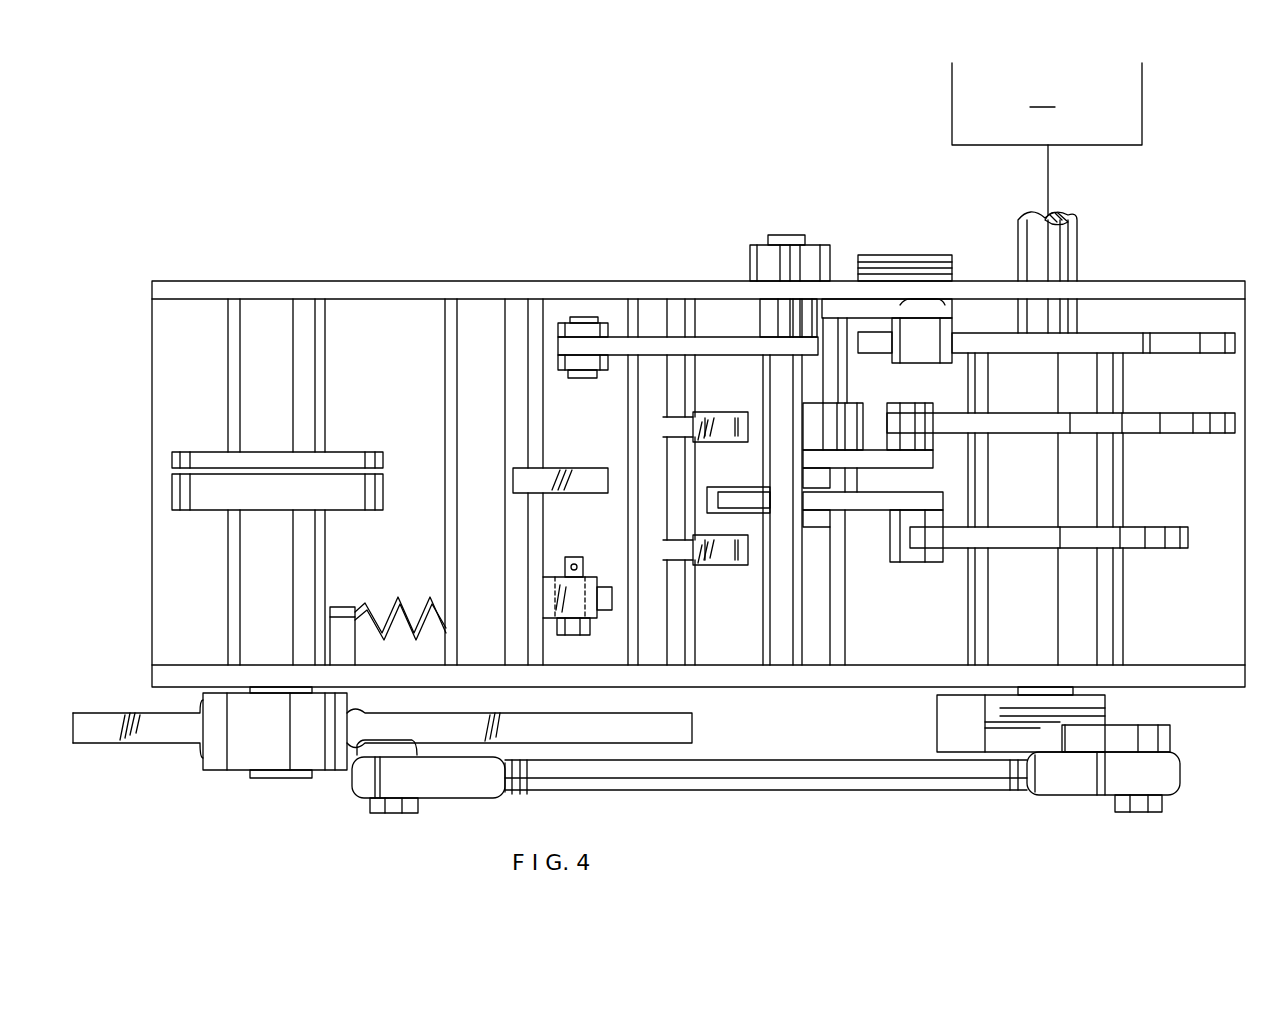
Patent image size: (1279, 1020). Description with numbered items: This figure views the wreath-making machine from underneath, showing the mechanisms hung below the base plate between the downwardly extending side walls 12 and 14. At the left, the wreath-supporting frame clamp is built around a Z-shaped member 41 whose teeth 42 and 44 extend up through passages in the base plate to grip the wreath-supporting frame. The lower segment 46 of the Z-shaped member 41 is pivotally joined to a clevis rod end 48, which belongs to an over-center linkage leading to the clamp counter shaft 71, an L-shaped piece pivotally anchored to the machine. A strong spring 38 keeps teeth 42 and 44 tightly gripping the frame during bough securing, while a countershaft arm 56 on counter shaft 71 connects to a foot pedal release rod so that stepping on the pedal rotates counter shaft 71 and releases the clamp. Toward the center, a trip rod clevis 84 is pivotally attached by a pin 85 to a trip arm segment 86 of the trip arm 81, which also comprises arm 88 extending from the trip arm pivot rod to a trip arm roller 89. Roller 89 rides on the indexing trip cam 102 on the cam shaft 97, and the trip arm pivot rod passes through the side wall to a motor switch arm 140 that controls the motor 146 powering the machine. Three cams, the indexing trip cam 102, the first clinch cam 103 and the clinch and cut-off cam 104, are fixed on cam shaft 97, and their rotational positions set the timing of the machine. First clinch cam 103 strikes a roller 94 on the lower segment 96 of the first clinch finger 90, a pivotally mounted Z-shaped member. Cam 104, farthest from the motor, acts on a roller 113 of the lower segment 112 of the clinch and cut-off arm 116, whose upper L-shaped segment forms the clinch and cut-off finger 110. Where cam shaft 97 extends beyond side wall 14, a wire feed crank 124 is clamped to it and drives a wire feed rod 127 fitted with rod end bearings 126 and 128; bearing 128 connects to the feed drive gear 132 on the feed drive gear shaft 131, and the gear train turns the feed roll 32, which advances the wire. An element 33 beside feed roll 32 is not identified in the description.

The side wall 12 is at (746, 682).
The side wall 14 is at (469, 298).
The feed roll 32 is at (362, 497).
The flange 33 is at (216, 460).
The spring 38 is at (412, 598).
The Z-shaped member 41 is at (677, 312).
The tooth 42 is at (712, 425).
The tooth 44 is at (717, 548).
The lower segment 46 is at (604, 596).
The clevis rod end 48 is at (571, 560).
The wreath-supporting frame clamp countershaft arm 56 is at (566, 481).
The clamp counter shaft 71 is at (500, 321).
The trip arm 81 is at (785, 300).
The trip rod clevis 84 is at (601, 327).
The pin 85 is at (581, 378).
The trip arm segment 86 is at (712, 345).
The trip arm 88 is at (875, 320).
The trip arm roller 89 is at (935, 325).
The first clinch finger 90 is at (850, 413).
The roller 94 is at (915, 418).
The lower segment 96 is at (895, 462).
The cam shaft 97 is at (1062, 320).
The indexing trip cam 102 is at (1036, 347).
The first clinch cam 103 is at (1036, 430).
The clinch and cut-off cam 104 is at (1040, 545).
The clinch and cut-off finger 110 is at (742, 496).
The lower segment 112 is at (875, 513).
The roller 113 is at (930, 562).
The clinch and cut-off arm 116 is at (840, 645).
The wire feed crank 124 is at (924, 740).
The rod end bearing 126 is at (1073, 786).
The wire feed rod 127 is at (740, 779).
The rod end bearing 128 is at (455, 785).
The feed drive gear shaft 131 is at (280, 779).
The feed drive gear 132 is at (677, 730).
The motor switch arm 140 is at (808, 241).
The motor 146 is at (1115, 145).